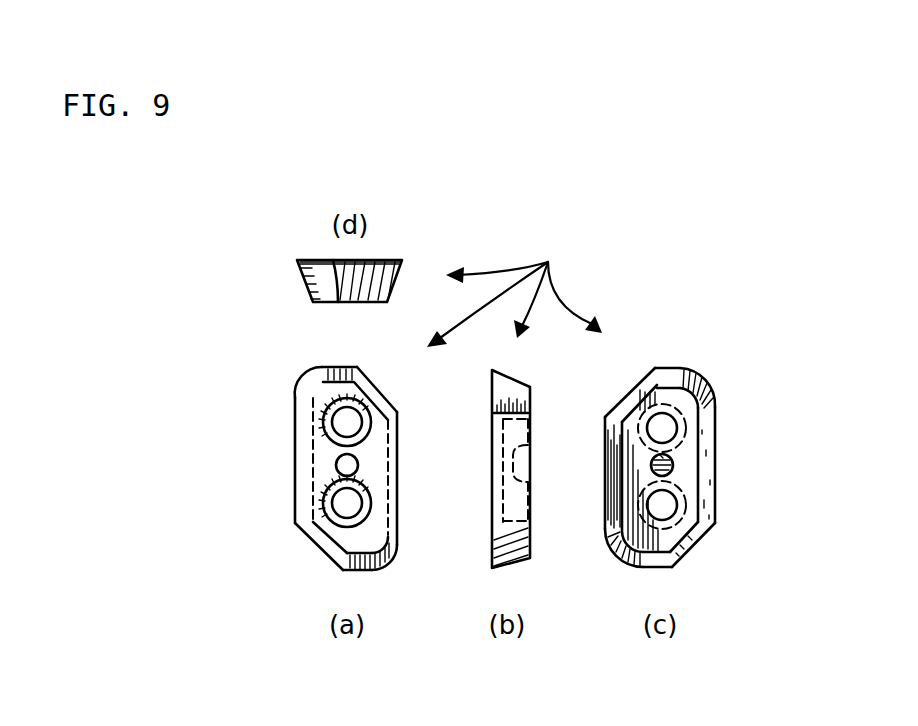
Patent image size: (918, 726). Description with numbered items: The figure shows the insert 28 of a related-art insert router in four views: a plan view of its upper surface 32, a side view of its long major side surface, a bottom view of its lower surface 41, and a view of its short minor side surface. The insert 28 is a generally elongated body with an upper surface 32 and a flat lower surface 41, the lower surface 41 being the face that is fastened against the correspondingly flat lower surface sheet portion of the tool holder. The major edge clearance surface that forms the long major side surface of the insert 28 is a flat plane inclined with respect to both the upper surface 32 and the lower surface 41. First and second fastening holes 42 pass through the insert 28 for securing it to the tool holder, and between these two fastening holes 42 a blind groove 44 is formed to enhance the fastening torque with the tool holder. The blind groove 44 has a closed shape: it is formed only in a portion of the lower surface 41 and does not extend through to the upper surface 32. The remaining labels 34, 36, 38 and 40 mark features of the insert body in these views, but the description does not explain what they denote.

The insert 28 is at (548, 262).
The upper surface 32 is at (492, 436).
The chamfered corner 34 is at (366, 372).
The rounded corner 36 is at (317, 370).
The end face 38 is at (348, 568).
The side face 40 is at (295, 447).
The lower surface 41 is at (530, 523).
The first and second fastening holes 42 is at (362, 420).
The blind groove 44 is at (672, 470).